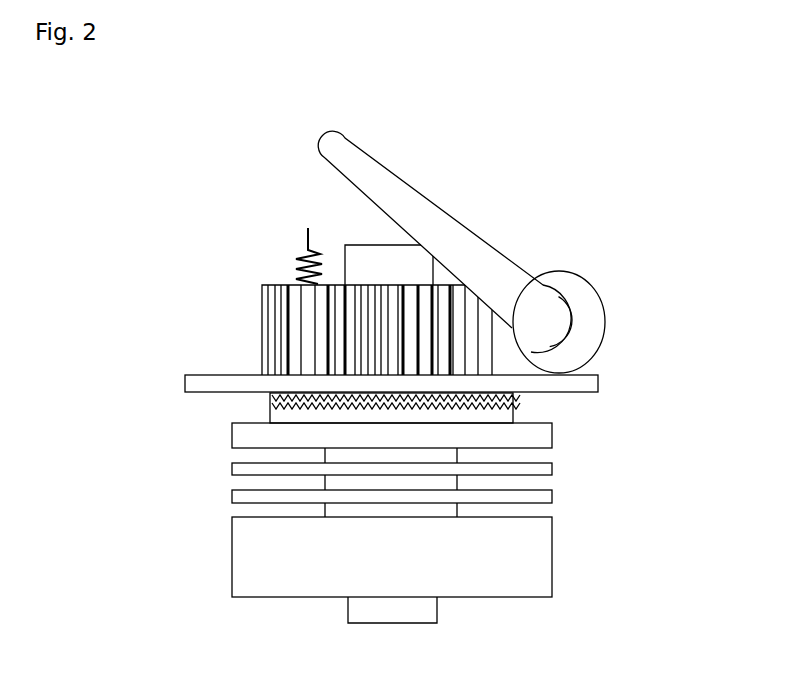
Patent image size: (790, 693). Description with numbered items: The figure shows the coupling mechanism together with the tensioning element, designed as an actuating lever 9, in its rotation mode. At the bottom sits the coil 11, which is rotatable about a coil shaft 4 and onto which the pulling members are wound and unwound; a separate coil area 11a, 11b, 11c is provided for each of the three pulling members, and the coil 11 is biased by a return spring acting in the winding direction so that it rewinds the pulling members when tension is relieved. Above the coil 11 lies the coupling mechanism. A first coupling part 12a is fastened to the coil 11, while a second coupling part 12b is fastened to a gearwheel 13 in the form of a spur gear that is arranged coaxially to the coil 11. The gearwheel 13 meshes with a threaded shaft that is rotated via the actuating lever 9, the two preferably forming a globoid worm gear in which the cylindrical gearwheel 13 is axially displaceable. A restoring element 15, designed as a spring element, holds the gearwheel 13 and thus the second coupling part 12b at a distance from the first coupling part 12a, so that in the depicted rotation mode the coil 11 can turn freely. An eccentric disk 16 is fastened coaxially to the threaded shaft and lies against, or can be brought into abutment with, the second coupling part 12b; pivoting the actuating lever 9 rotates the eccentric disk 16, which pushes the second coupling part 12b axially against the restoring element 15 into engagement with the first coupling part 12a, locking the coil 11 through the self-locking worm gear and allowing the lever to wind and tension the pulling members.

The actuating lever 9 is at (435, 205).
The eccentric disk 16 is at (597, 303).
The coil shaft 4 is at (366, 246).
The restoring element 15 is at (293, 258).
The gearwheel 13 is at (260, 332).
The second coupling part 12b is at (262, 395).
The first coupling part 12a is at (513, 416).
The coil area 11c is at (555, 455).
The coil area 11b is at (555, 483).
The coil area 11a is at (555, 507).
The coil 11 is at (235, 543).